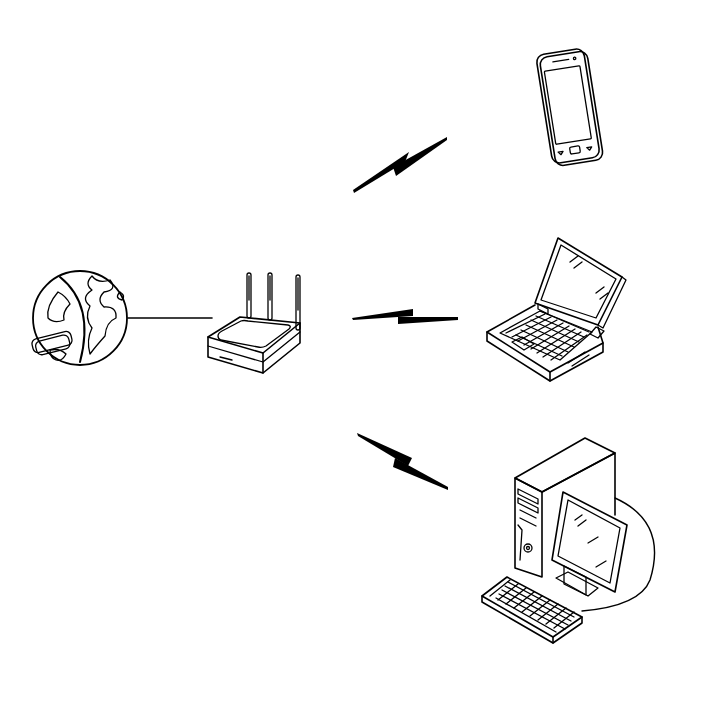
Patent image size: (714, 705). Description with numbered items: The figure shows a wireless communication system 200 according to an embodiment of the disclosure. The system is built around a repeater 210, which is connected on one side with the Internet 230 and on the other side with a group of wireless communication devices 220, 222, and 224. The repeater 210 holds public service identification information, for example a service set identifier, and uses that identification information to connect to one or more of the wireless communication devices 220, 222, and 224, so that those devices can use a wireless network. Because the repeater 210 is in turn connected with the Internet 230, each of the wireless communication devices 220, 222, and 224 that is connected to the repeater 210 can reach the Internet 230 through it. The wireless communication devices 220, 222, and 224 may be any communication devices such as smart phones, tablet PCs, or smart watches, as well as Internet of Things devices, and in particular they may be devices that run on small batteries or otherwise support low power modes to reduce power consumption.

The wireless communication system 200 is at (150, 33).
The repeater 210 is at (298, 273).
The wireless communication device 220 is at (591, 51).
The wireless communication device 222 is at (608, 267).
The wireless communication device 224 is at (605, 447).
The Internet 230 is at (107, 281).